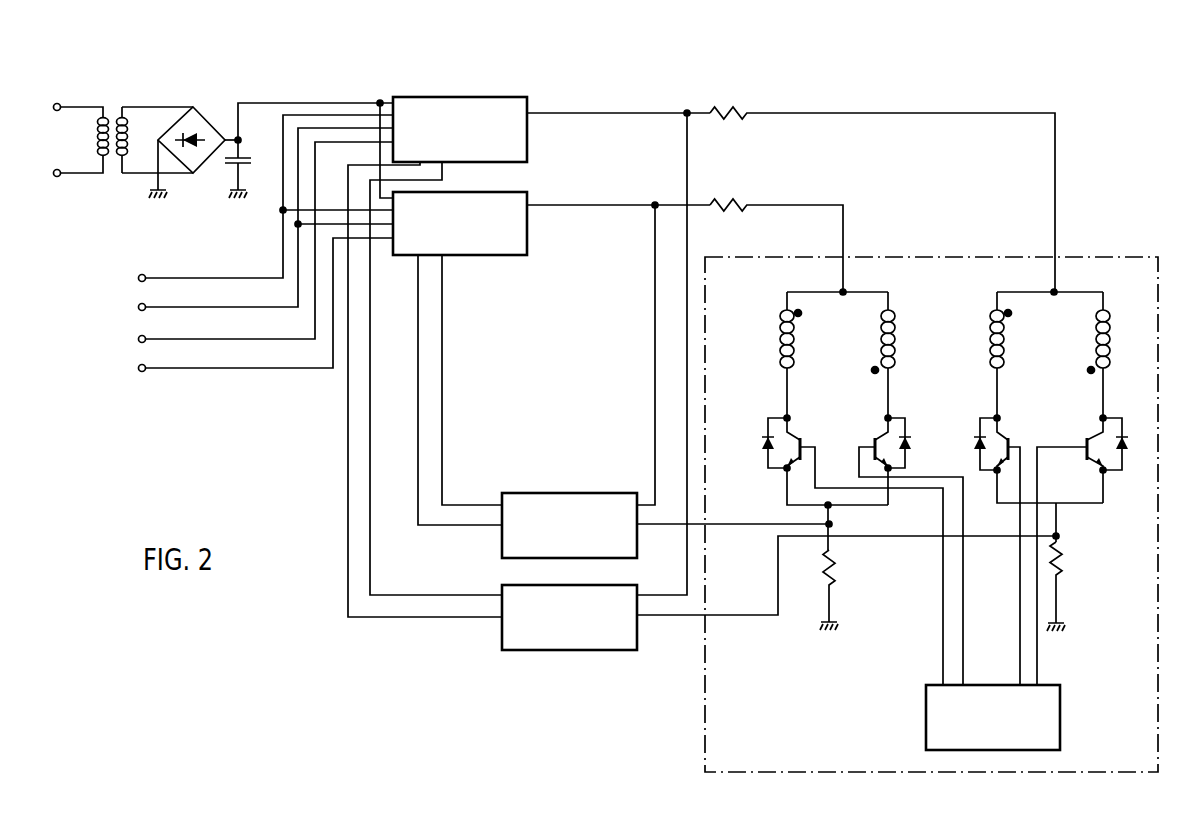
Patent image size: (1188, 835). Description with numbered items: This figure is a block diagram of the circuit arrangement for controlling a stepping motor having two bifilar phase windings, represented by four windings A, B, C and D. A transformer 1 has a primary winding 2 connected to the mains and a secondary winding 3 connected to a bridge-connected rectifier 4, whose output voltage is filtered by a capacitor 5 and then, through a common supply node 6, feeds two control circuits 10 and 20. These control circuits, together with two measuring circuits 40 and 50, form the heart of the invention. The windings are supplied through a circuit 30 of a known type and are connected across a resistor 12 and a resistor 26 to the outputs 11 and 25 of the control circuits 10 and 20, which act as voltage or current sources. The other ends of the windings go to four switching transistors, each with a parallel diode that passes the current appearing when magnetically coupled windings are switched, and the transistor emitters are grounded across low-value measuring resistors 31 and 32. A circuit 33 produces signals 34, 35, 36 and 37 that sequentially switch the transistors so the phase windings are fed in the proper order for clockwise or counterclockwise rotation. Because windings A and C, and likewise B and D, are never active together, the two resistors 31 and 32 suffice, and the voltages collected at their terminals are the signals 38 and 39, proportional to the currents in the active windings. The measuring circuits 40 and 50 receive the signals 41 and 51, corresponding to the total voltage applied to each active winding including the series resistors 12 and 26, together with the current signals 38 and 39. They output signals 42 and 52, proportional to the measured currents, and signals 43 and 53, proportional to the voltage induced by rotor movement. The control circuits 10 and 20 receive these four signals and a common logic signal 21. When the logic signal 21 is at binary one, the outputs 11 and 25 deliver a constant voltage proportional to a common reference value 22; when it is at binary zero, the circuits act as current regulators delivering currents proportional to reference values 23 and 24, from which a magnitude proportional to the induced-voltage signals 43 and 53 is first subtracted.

The transformer 1 is at (112, 106).
The primary winding 2 is at (82, 105).
The secondary winding 3 is at (158, 106).
The bridge-connected rectifier 4 is at (212, 123).
The capacitor 5 is at (258, 160).
The supply line node 6 is at (380, 101).
The control circuit 10 is at (477, 108).
The output 11 is at (605, 110).
The resistor 12 is at (730, 108).
The control circuit 20 is at (528, 194).
The logic signal 21 is at (160, 278).
The reference value 22 is at (225, 305).
The reference value 23 is at (228, 340).
The reference value 24 is at (183, 368).
The output 25 is at (618, 203).
The resistor 26 is at (718, 203).
The circuit 30 is at (1123, 250).
The measuring resistor 31 is at (1062, 560).
The measuring resistor 32 is at (834, 568).
The circuit 33 is at (948, 722).
The signal 34 is at (940, 633).
The signal 35 is at (965, 633).
The signal 36 is at (1018, 632).
The signal 37 is at (1038, 632).
The signal 38 is at (720, 524).
The signal 39 is at (722, 615).
The measuring circuit 40 is at (562, 652).
The signal 41 is at (668, 593).
The signal 42 is at (440, 593).
The signal 43 is at (458, 620).
The measuring circuit 50 is at (557, 492).
The signal 51 is at (655, 470).
The signal 52 is at (476, 503).
The signal 53 is at (442, 527).